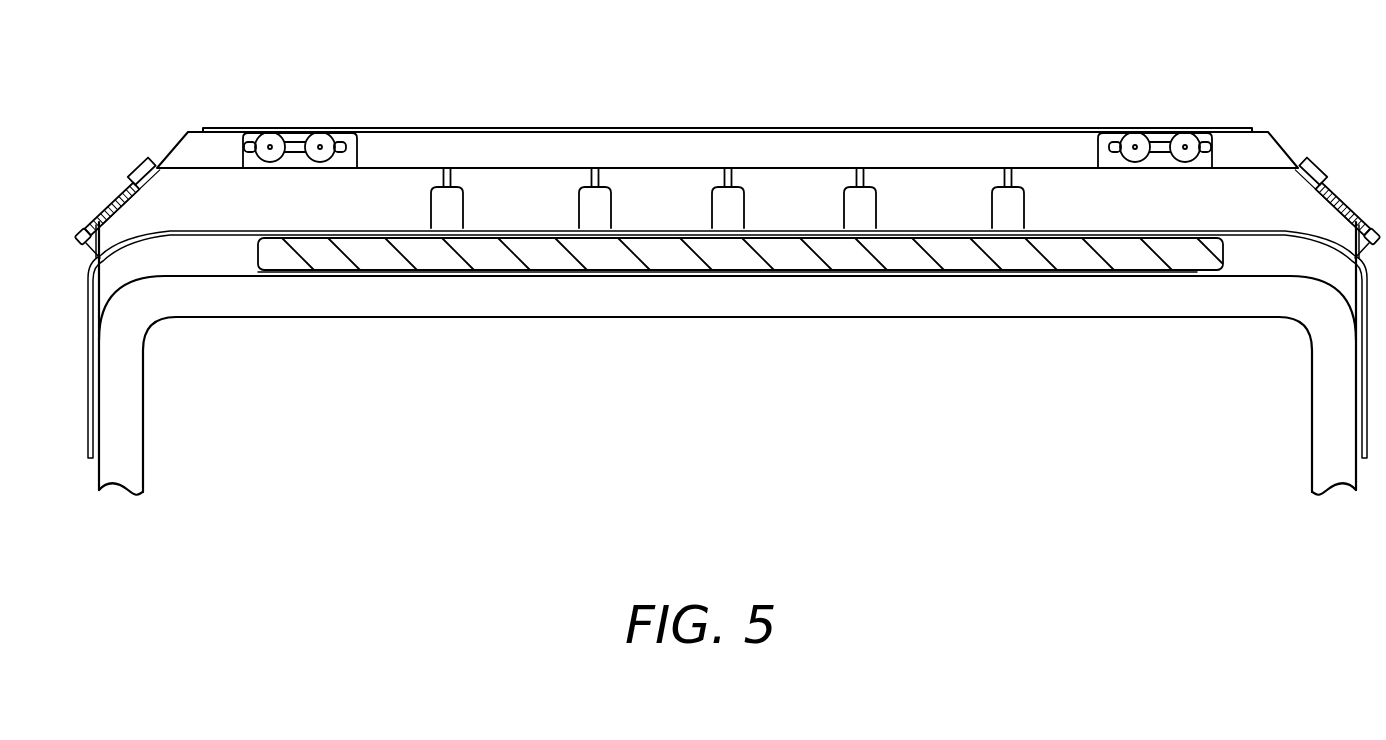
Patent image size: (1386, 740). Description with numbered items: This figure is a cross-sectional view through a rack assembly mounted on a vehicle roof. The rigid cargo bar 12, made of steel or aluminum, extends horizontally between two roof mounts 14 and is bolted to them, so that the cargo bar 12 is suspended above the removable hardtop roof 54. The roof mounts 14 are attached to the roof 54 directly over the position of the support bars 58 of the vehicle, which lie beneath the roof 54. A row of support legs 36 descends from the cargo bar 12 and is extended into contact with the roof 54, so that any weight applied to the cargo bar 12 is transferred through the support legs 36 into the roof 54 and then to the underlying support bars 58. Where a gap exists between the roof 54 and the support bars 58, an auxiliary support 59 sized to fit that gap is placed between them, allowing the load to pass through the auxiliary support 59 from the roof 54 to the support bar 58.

The cargo bar 12 is at (822, 138).
The roof mount 14 is at (185, 147).
The support leg 36 is at (713, 207).
The hardtop roof 54 is at (88, 332).
The support bar 58 is at (395, 302).
The auxiliary support 59 is at (538, 258).